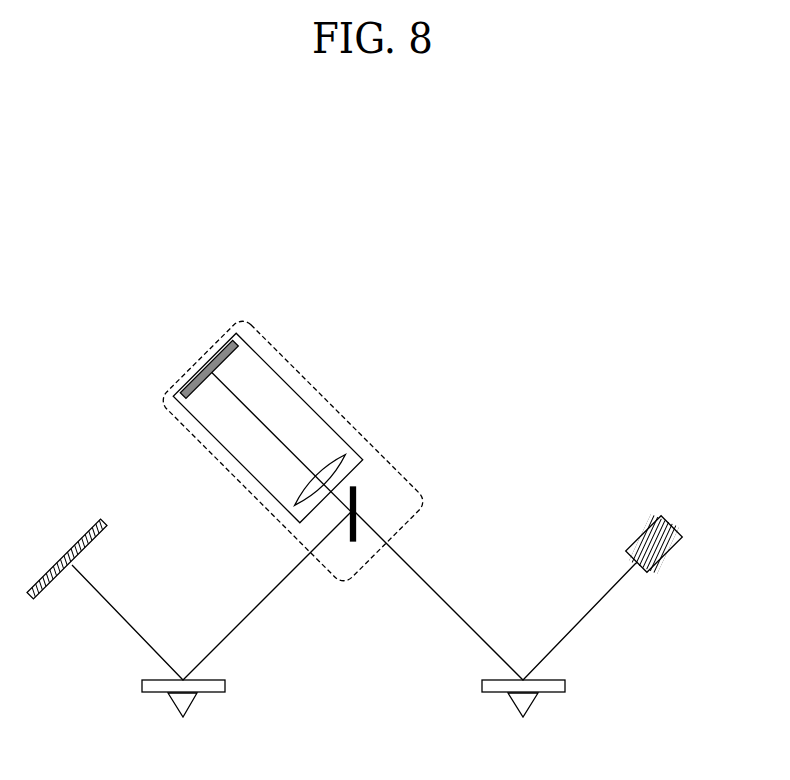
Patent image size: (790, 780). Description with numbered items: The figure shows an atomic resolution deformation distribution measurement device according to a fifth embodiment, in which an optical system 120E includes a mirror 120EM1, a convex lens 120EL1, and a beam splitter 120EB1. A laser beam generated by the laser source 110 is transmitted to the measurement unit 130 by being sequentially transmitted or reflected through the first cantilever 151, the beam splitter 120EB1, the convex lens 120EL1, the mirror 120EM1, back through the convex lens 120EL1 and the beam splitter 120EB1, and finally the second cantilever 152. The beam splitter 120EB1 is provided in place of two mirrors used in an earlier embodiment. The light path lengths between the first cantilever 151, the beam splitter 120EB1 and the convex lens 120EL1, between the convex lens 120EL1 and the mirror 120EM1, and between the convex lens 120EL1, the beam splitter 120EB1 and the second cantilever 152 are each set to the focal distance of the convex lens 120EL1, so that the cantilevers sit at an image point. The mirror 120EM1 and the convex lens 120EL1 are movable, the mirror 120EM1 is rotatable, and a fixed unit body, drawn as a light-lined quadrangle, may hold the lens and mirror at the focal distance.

The laser source 110 is at (673, 520).
The measurement unit 130 is at (72, 548).
The first cantilever 151 is at (527, 702).
The second cantilever 152 is at (180, 703).
The optical system 120E is at (302, 372).
The mirror 120EM1 is at (185, 374).
The convex lens 120EL1 is at (333, 456).
The beam splitter 120EB1 is at (357, 494).